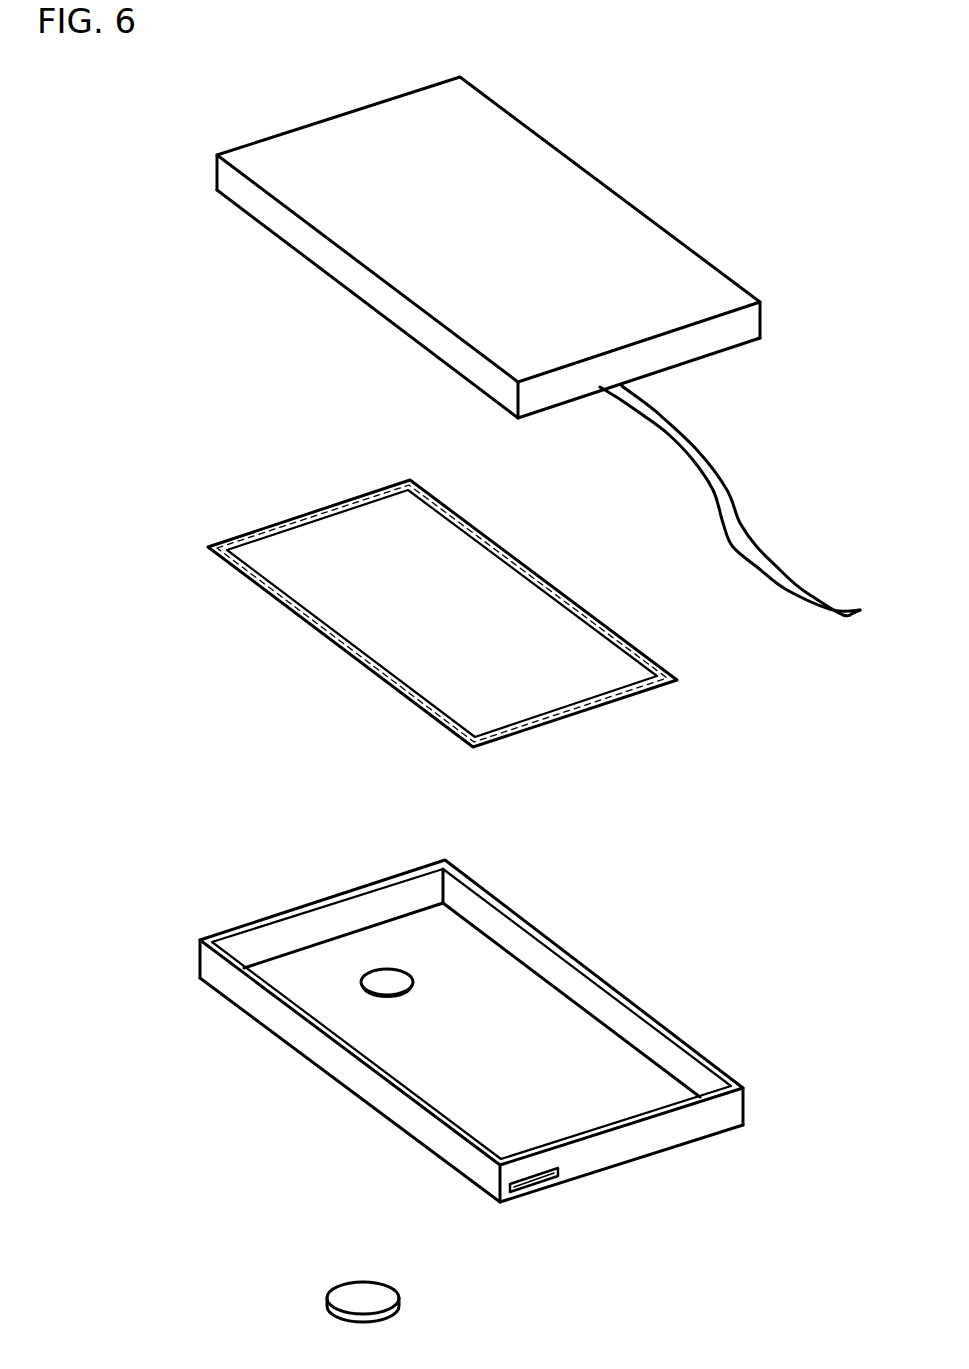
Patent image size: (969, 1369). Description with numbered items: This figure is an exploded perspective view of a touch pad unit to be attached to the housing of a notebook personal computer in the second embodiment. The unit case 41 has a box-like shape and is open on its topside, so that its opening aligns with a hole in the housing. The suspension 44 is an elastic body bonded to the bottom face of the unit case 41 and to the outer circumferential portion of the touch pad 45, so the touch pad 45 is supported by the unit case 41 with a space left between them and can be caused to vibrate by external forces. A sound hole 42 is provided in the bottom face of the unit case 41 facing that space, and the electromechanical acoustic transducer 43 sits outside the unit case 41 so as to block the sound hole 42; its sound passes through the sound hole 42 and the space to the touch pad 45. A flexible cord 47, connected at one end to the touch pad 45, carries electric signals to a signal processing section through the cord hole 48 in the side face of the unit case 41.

The unit case 41 is at (703, 1053).
The sound hole 42 is at (378, 970).
The electromechanical acoustic transducer 43 is at (378, 1308).
The suspension 44 is at (222, 540).
The touch pad 45 is at (615, 233).
The flexible cord 47 is at (772, 580).
The cord hole 48 is at (533, 1192).